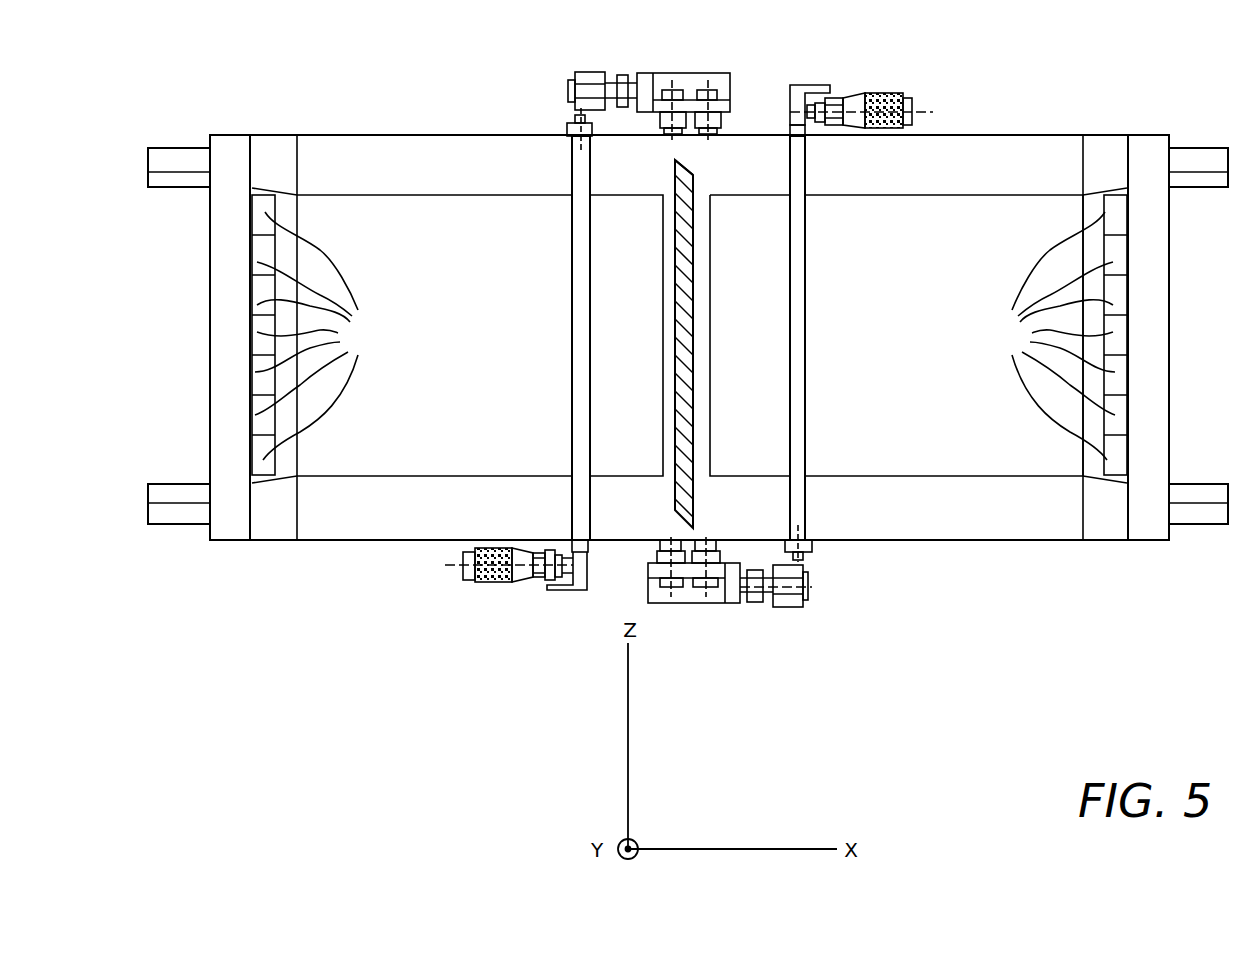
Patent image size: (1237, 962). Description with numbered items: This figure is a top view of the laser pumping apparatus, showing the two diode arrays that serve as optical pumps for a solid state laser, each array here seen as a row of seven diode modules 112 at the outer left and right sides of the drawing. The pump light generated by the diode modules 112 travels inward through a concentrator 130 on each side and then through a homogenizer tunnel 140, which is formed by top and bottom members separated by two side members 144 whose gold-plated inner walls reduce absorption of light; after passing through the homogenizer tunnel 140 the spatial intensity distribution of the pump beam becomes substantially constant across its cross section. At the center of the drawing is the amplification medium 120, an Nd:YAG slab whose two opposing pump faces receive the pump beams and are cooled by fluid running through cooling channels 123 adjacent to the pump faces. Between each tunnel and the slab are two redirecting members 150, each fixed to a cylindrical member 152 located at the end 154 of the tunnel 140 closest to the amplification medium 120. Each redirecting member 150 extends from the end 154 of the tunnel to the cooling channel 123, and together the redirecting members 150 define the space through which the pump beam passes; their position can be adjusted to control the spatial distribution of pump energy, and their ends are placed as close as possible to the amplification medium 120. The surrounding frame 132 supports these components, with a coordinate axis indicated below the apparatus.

The diode module 112 is at (689, 335).
The amplification medium 120 is at (693, 172).
The cooling channel 123 is at (668, 207).
The concentrator 130 is at (283, 478).
The frame 132 is at (688, 303).
The homogenizer tunnel 140 is at (343, 478).
The side member 144 is at (378, 508).
The redirecting member 150 is at (610, 218).
The cylindrical member 152 is at (578, 238).
The end of the tunnel 154 is at (572, 430).